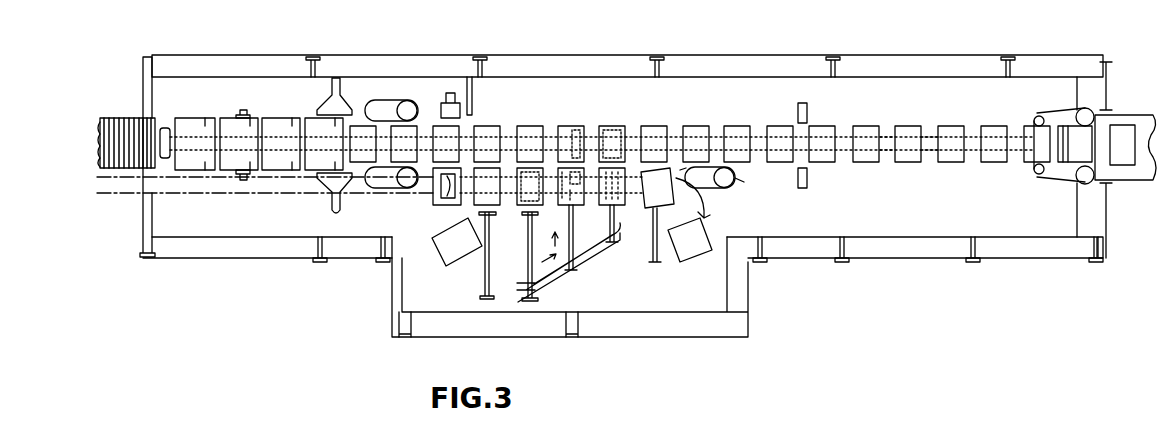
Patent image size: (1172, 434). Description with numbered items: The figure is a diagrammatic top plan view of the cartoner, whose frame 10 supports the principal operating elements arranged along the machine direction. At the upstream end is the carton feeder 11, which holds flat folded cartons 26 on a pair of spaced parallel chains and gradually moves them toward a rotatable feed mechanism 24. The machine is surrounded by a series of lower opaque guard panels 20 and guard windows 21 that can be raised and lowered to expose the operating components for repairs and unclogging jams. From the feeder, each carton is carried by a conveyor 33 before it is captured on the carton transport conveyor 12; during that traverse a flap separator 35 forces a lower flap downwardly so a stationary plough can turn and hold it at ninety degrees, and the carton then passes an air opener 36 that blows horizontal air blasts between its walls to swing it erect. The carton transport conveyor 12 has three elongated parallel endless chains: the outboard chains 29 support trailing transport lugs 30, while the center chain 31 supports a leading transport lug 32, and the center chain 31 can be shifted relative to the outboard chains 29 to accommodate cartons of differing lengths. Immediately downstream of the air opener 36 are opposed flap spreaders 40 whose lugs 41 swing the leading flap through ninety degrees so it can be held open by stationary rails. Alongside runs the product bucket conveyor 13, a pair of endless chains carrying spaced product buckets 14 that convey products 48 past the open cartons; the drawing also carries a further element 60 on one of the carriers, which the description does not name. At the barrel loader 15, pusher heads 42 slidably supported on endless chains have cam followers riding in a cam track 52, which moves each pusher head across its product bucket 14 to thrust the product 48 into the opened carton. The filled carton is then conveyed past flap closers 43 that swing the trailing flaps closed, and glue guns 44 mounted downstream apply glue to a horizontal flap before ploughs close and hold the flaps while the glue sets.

The frame 10 is at (626, 173).
The carton feeder 11 is at (103, 125).
The carton transport conveyor 12 is at (724, 118).
The product bucket conveyor 13 is at (423, 207).
The product buckets 14 is at (487, 184).
The barrel loader 15 is at (474, 264).
The lower opaque guard panels 20 is at (804, 49).
The guard windows 21 is at (623, 247).
The rotatable feed mechanism 24 is at (173, 119).
The flat folded cartons 26 is at (104, 147).
The outboard chains 29 is at (851, 174).
The trailing transport lugs 30 is at (891, 138).
The center chain 31 is at (948, 168).
The leading transport lug 32 is at (926, 142).
The conveyor 33 is at (229, 111).
The flap separator 35 is at (252, 107).
The air opener 36 is at (335, 100).
The flap spreaders 40 is at (403, 90).
The lugs 41 is at (368, 106).
The pusher heads 42 is at (480, 213).
The flap closers 43 is at (725, 204).
The glue guns 44 is at (809, 202).
The products 48 is at (528, 158).
The cam track 52 is at (598, 244).
The tray cover 60 is at (486, 152).